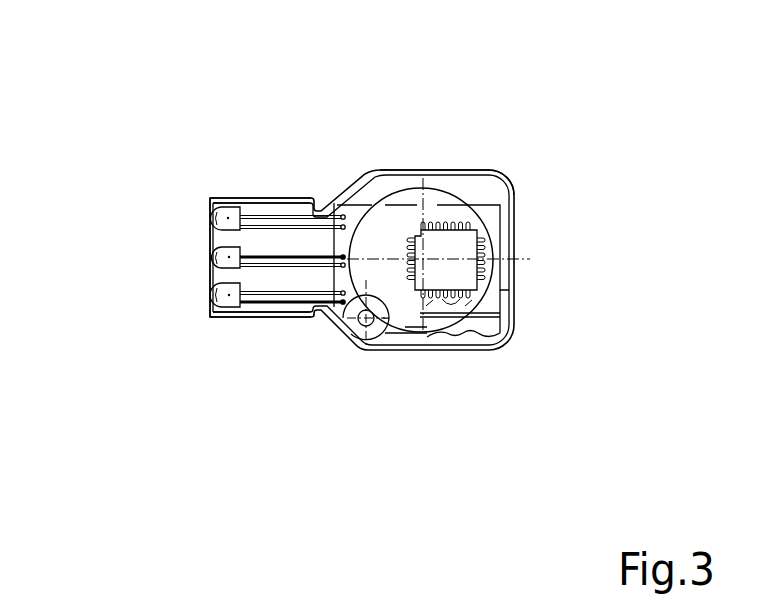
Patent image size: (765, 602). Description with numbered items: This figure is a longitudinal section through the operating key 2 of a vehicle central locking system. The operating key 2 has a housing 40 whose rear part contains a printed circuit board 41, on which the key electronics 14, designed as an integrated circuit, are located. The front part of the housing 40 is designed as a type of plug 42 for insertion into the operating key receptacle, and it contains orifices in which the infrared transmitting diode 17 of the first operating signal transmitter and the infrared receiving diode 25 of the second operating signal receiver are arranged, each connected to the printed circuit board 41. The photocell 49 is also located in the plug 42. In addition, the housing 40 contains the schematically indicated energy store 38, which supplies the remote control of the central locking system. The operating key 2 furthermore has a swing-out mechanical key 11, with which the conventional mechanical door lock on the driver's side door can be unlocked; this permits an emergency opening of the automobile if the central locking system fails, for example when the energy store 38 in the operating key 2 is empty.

The operating key 2 is at (358, 160).
The mechanical key 11 is at (478, 330).
The key electronics 14 is at (463, 246).
The infrared transmitting diode 17 is at (213, 215).
The infrared receiving diode 25 is at (212, 305).
The energy store 38 is at (437, 203).
The housing 40 is at (407, 170).
The printed circuit board 41 is at (490, 218).
The plug 42 is at (240, 202).
The photocell 49 is at (229, 257).